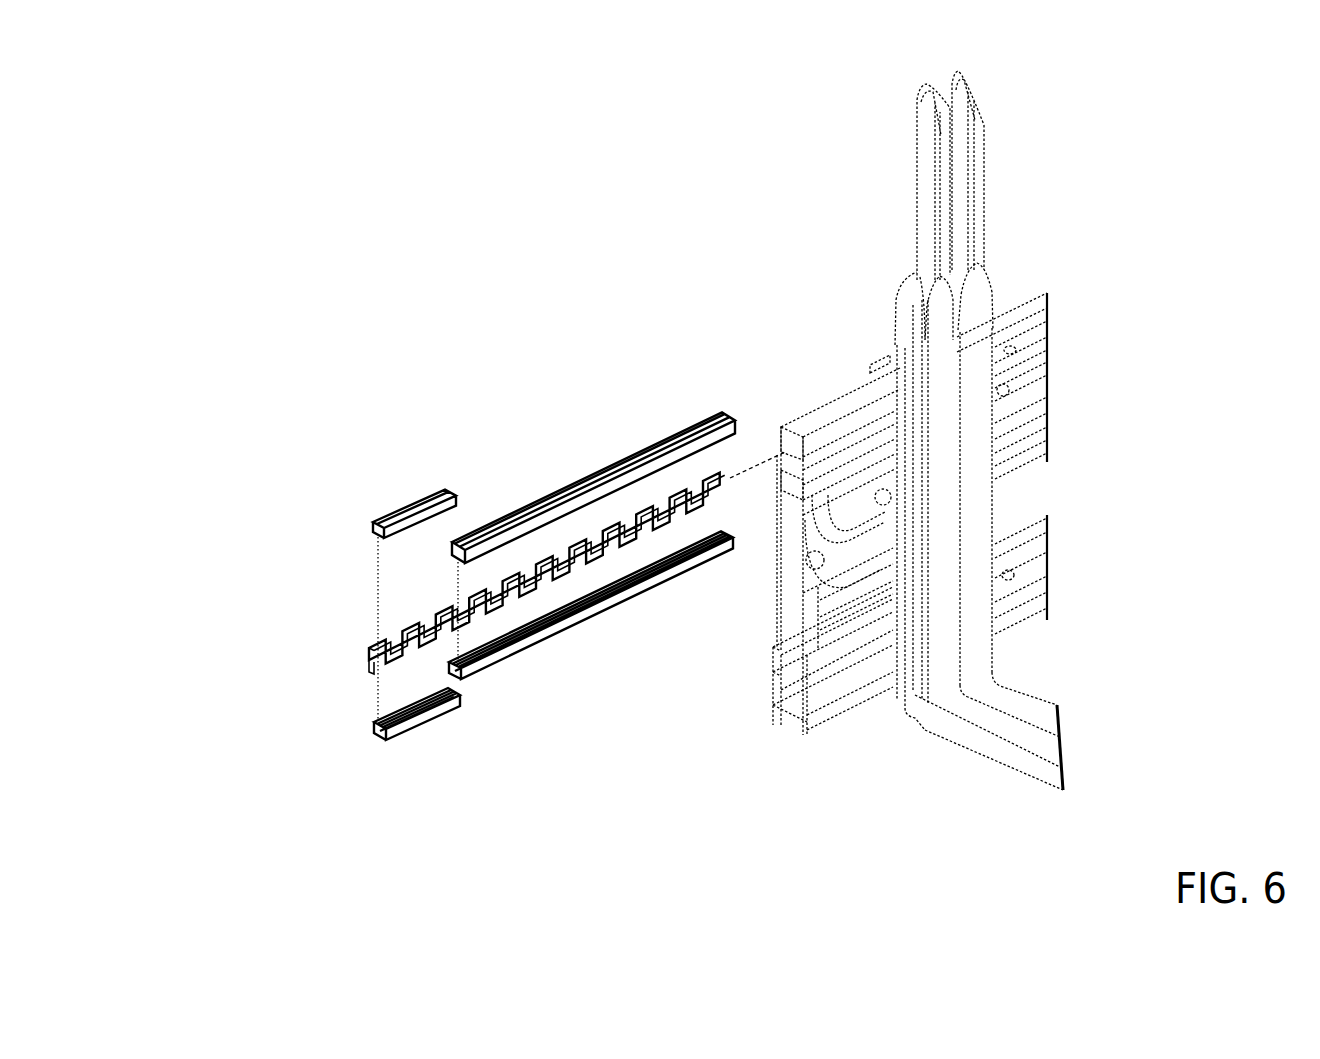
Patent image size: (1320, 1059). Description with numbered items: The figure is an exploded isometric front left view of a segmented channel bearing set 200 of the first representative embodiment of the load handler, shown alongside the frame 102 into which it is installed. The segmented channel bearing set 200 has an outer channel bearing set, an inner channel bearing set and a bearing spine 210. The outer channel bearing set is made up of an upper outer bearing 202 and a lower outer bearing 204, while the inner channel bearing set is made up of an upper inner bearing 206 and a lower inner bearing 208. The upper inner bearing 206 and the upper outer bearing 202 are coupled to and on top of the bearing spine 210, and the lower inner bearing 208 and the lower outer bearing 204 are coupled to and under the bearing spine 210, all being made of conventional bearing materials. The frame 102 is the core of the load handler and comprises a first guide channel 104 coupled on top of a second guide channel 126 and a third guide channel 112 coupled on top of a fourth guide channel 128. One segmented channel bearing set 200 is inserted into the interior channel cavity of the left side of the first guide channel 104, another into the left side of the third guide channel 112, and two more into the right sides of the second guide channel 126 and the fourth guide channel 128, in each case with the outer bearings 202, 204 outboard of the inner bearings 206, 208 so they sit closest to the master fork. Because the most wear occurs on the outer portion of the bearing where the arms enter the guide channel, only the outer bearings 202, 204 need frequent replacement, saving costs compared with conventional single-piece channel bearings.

The segmented channel bearing set 200 is at (302, 85).
The upper outer bearing 202 is at (400, 512).
The lower outer bearing 204 is at (368, 750).
The upper inner bearing 206 is at (690, 425).
The lower inner bearing 208 is at (503, 663).
The bearing spine 210 is at (367, 643).
The frame 102 is at (857, 393).
The first guide channel 104 is at (790, 452).
The second guide channel 126 is at (793, 483).
The third guide channel 112 is at (785, 680).
The fourth guide channel 128 is at (795, 708).